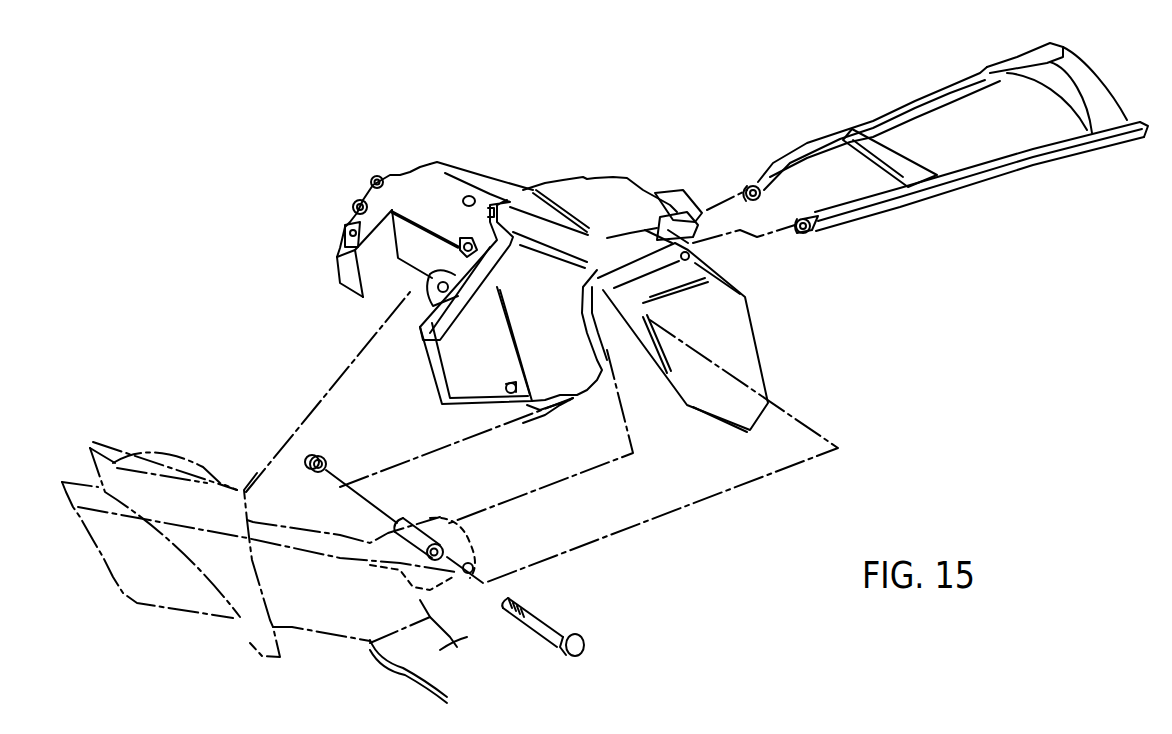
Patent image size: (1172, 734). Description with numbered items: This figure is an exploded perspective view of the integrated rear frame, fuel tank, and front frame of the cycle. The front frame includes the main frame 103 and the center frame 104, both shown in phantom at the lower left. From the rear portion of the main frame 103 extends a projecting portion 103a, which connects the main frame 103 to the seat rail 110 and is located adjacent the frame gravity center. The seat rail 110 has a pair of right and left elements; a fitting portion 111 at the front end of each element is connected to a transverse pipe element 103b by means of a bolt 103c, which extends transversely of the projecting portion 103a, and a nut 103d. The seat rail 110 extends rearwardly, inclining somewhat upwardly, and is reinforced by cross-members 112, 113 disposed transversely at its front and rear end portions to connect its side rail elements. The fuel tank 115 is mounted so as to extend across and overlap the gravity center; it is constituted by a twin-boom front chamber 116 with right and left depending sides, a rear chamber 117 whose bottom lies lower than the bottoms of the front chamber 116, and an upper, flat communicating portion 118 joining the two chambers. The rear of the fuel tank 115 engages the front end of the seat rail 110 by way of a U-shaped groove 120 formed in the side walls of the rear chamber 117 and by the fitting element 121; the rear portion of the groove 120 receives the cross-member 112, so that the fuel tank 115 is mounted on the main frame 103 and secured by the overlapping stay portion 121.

The main frame 103 is at (153, 585).
The projecting portion 103a is at (485, 552).
The transverse pipe element 103b is at (408, 518).
The bolt 103c is at (580, 637).
The nut 103d is at (320, 461).
The center frame 104 is at (457, 640).
The seat rail 110 is at (915, 99).
The fitting portion 111 is at (750, 183).
The cross-member 112 is at (913, 167).
The cross-member 113 is at (1088, 88).
The fuel tank 115 is at (485, 174).
The front chamber 116 is at (408, 292).
The rear chamber 117 is at (757, 372).
The upper, flat communicating portion 118 is at (612, 185).
The groove 120 is at (691, 256).
The fitting element 121 is at (672, 200).